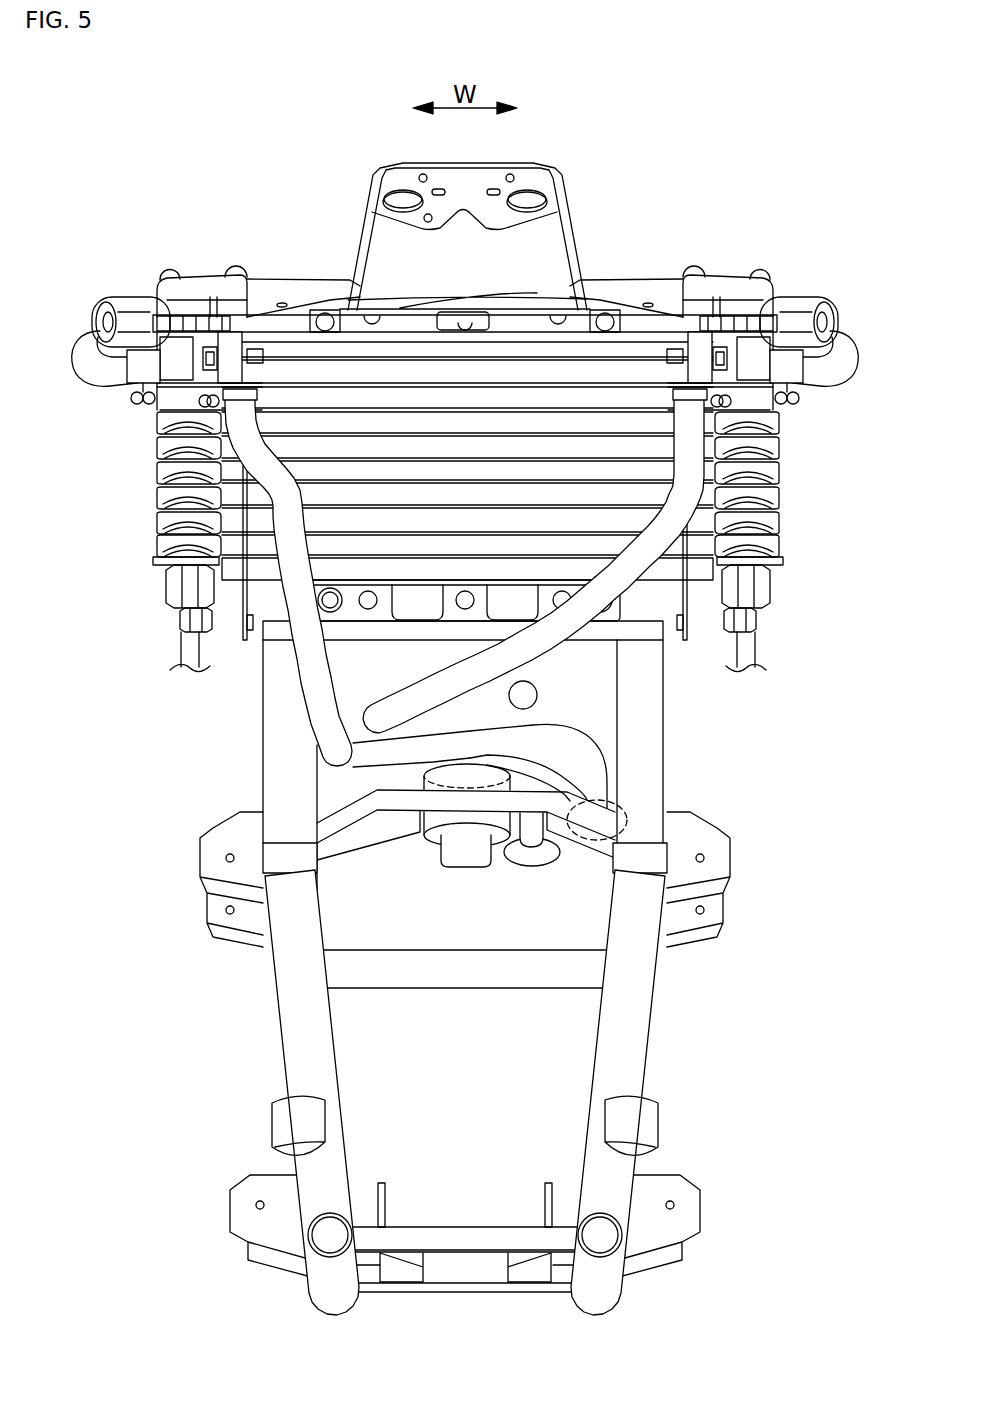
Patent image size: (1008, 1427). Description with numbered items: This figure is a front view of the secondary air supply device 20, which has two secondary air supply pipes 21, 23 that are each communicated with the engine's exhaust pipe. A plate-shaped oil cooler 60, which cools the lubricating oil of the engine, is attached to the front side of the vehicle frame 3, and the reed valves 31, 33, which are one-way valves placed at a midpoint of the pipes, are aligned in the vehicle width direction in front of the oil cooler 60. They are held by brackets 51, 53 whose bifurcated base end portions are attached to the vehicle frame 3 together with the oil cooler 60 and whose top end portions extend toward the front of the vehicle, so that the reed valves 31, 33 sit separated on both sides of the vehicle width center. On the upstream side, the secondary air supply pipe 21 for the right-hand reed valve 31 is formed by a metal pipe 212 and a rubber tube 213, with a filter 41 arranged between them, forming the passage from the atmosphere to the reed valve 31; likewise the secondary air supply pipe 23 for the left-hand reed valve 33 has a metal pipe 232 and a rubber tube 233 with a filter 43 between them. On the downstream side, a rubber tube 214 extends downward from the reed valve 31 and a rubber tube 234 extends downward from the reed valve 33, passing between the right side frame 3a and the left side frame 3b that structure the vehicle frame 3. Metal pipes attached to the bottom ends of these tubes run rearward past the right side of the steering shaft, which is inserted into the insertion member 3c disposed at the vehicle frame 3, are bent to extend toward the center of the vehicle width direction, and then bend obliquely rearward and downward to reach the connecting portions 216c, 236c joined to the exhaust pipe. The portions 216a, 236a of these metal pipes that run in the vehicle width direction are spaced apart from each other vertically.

The secondary air supply device 20 is at (797, 239).
The secondary air supply pipe 21 is at (306, 707).
The secondary air supply pipe 23 is at (553, 646).
The vehicle frame 3 is at (302, 1010).
The right side frame 3a is at (325, 1058).
The left side frame 3b is at (613, 1055).
The insertion member 3c is at (462, 862).
The reed valve 31 is at (143, 312).
The reed valve 33 is at (730, 320).
The filter 41 is at (117, 293).
The filter 43 is at (790, 293).
The bracket 51 is at (290, 287).
The bracket 53 is at (640, 280).
The oil cooler 60 is at (772, 470).
The metal pipe 212 is at (218, 287).
The rubber tube 213 is at (97, 363).
The rubber tube 214 is at (307, 677).
The portion of metal pipe 216a is at (380, 753).
The connecting portion 216c is at (528, 862).
The metal pipe 232 is at (708, 290).
The rubber tube 233 is at (837, 360).
The rubber tube 234 is at (523, 647).
The portion of metal pipe 236a is at (547, 745).
The connecting portion 236c is at (623, 810).